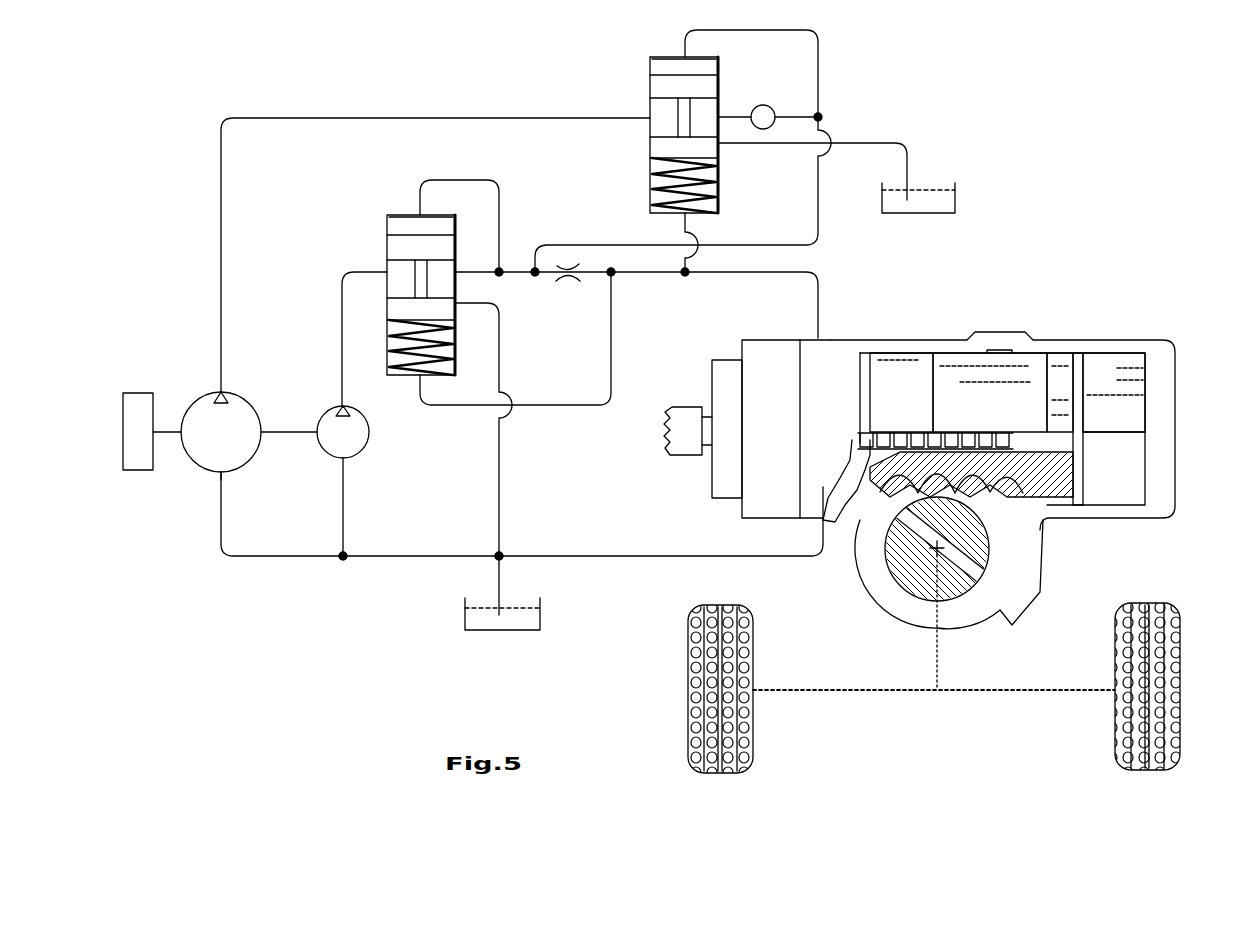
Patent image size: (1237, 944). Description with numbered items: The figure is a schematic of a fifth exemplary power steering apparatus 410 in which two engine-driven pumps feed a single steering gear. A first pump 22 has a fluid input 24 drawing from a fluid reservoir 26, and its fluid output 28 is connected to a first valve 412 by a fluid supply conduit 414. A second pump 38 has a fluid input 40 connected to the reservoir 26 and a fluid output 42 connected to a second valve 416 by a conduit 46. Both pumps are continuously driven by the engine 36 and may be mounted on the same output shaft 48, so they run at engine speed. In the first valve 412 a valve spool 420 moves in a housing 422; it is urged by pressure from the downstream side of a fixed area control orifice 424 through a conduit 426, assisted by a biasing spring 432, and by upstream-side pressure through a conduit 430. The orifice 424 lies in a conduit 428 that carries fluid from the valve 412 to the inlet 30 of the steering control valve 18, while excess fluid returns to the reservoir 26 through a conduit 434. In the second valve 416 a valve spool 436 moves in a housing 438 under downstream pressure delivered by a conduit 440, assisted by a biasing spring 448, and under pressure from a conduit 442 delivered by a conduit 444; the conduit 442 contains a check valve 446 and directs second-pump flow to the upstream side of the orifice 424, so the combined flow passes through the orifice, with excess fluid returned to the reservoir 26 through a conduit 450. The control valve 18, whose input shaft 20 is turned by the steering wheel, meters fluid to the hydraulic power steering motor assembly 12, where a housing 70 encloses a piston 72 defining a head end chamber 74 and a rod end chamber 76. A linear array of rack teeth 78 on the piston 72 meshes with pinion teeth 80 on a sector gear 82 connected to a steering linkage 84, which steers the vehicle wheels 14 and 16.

The steering apparatus 410 is at (1065, 110).
The hydraulic power steering motor assembly 12 is at (1177, 407).
The steerable vehicle wheel 14 is at (687, 750).
The steerable vehicle wheel 16 is at (1170, 745).
The steering control valve 18 is at (723, 500).
The input shaft 20 is at (677, 438).
The first pump 22 is at (352, 438).
The fluid input 24 is at (346, 459).
The fluid reservoir 26 is at (942, 202).
The fluid output 28 is at (341, 404).
The inlet 30 is at (823, 338).
The engine 36 is at (136, 455).
The second pump 38 is at (205, 430).
The fluid input 40 is at (222, 474).
The fluid output 42 is at (223, 393).
The conduit 46 is at (300, 117).
The output shaft 48 is at (165, 433).
The housing 70 is at (1100, 348).
The piston 72 is at (955, 390).
The head end chamber 74 is at (857, 490).
The rod end chamber 76 is at (1127, 473).
The linear array of rack teeth 78 is at (1007, 507).
The pinion teeth 80 is at (1033, 550).
The sector gear 82 is at (912, 562).
The steering linkage 84 is at (942, 648).
The first valve 412 is at (383, 226).
The fluid supply conduit 414 is at (338, 322).
The second valve 416 is at (665, 55).
The valve spool 420 is at (405, 250).
The housing 422 is at (407, 213).
The fixed area control orifice 424 is at (563, 276).
The conduit 426 is at (563, 407).
The conduit 428 is at (757, 274).
The conduit 430 is at (458, 177).
The biasing spring 432 is at (393, 350).
The conduit 434 is at (502, 505).
The valve spool 436 is at (668, 87).
The housing 438 is at (712, 55).
The conduit 440 is at (687, 228).
The conduit 442 is at (820, 116).
The conduit 444 is at (820, 55).
The check valve 446 is at (752, 130).
The biasing spring 448 is at (655, 190).
The conduit 450 is at (910, 148).